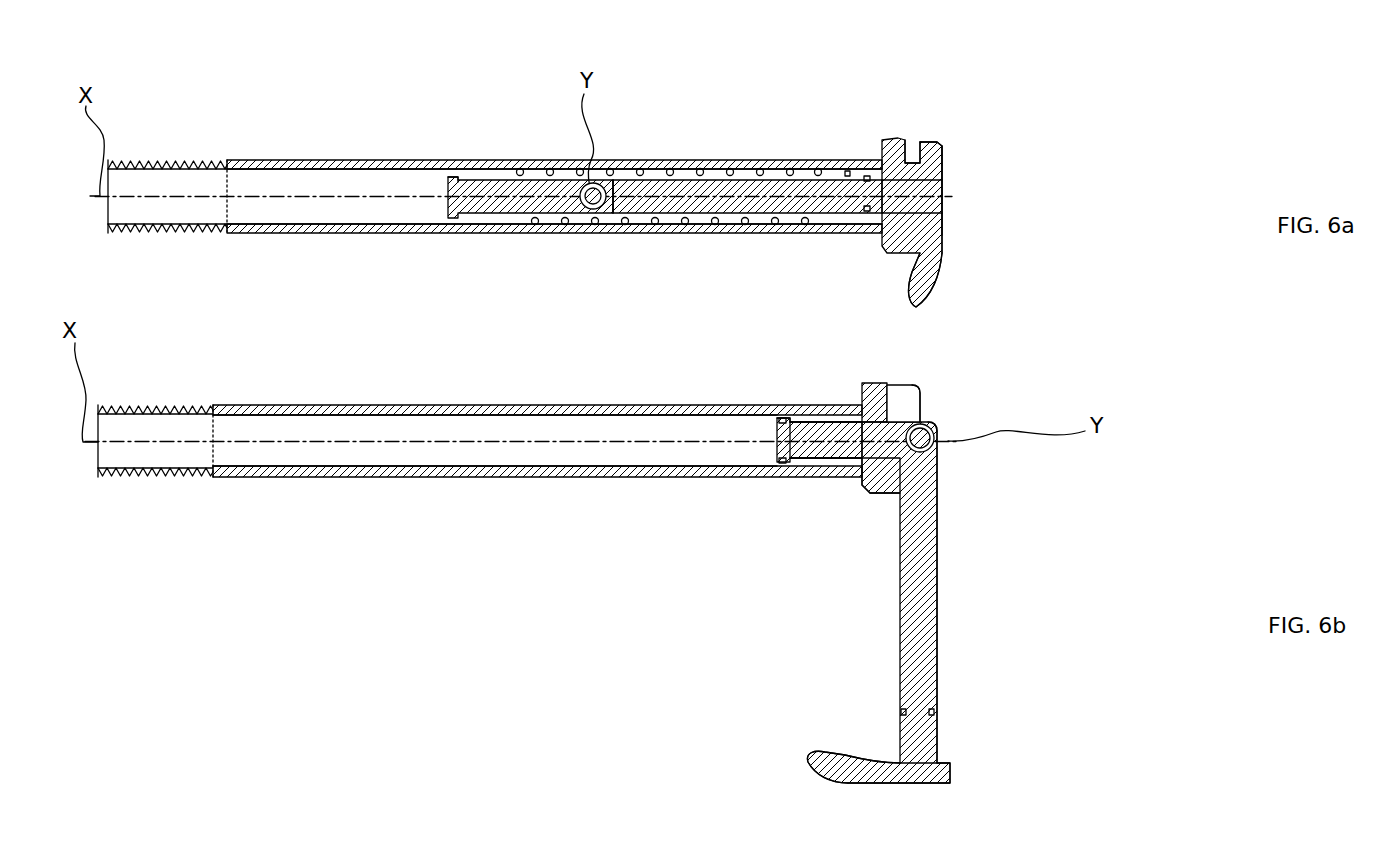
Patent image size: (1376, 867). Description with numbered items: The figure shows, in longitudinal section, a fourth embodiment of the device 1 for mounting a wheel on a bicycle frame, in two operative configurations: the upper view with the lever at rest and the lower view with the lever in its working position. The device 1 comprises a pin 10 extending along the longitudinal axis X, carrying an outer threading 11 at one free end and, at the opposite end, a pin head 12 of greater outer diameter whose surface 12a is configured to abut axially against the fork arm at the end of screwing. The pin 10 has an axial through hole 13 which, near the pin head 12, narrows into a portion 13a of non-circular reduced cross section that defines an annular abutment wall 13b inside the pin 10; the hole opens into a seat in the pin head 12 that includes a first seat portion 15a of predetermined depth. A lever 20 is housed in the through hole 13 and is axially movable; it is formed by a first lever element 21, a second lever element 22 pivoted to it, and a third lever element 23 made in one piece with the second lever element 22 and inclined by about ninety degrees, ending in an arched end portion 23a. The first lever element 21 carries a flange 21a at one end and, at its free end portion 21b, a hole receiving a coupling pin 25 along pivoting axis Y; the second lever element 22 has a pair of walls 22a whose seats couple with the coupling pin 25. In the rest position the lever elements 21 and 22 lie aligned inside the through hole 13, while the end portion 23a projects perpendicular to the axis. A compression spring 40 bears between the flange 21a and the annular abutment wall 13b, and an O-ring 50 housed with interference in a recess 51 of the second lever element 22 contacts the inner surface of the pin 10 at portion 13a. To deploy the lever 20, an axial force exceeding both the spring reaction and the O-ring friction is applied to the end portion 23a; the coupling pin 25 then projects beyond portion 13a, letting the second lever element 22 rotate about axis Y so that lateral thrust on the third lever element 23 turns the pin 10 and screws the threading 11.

In FIG. 6A, the device for mounting a wheel on a bicycle frame 1 is at (998, 168).
In FIG. 6B, the device for mounting a wheel on a bicycle frame 1 is at (944, 434).
In FIG. 6A, the pin 10 is at (492, 160).
In FIG. 6B, the pin 10 is at (525, 478).
In FIG. 6A, the outer threading 11 is at (170, 232).
In FIG. 6B, the outer threading 11 is at (152, 480).
In FIG. 6A, the pin head 12 is at (923, 158).
In FIG. 6B, the pin head 12 is at (869, 378).
In FIG. 6A, the surface 12a is at (896, 150).
In FIG. 6B, the surface 12a is at (860, 396).
In FIG. 6A, the axial through hole 13 is at (355, 208).
In FIG. 6B, the axial through hole 13 is at (358, 450).
In FIG. 6A, the portion of the axial through hole 13a is at (844, 174).
In FIG. 6B, the portion of the axial through hole 13a is at (837, 461).
In FIG. 6A, the annular abutment wall 13b is at (814, 168).
In FIG. 6B, the annular abutment wall 13b is at (816, 414).
In FIG. 6A, the first seat portion 15a is at (934, 146).
In FIG. 6B, the first seat portion 15a is at (902, 398).
In FIG. 6A, the lever 20 is at (950, 224).
In FIG. 6B, the lever 20 is at (950, 557).
In FIG. 6A, the first lever element 21 is at (466, 200).
In FIG. 6B, the first lever element 21 is at (822, 452).
In FIG. 6A, the flange 21a is at (454, 184).
In FIG. 6B, the flange 21a is at (780, 420).
In FIG. 6A, the free end portion of the first lever element 21b is at (598, 210).
In FIG. 6B, the free end portion of the first lever element 21b is at (924, 416).
In FIG. 6A, the second lever element 22 is at (742, 202).
In FIG. 6B, the second lever element 22 is at (924, 603).
In FIG. 6A, the pair of walls 22a is at (598, 180).
In FIG. 6B, the pair of walls 22a is at (944, 449).
In FIG. 6A, the third lever element 23 is at (943, 185).
In FIG. 6B, the third lever element 23 is at (930, 777).
In FIG. 6A, the arched end portion 23a is at (918, 282).
In FIG. 6B, the arched end portion 23a is at (833, 763).
In FIG. 6A, the coupling pin 25 is at (590, 208).
In FIG. 6B, the coupling pin 25 is at (932, 424).
In FIG. 6A, the compression spring 40 is at (692, 232).
In FIG. 6B, the compression spring 40 is at (790, 463).
In FIG. 6A, the O-ring 50 is at (866, 210).
In FIG. 6B, the O-ring 50 is at (938, 712).
In FIG. 6A, the recess 51 is at (866, 176).
In FIG. 6B, the recess 51 is at (898, 712).